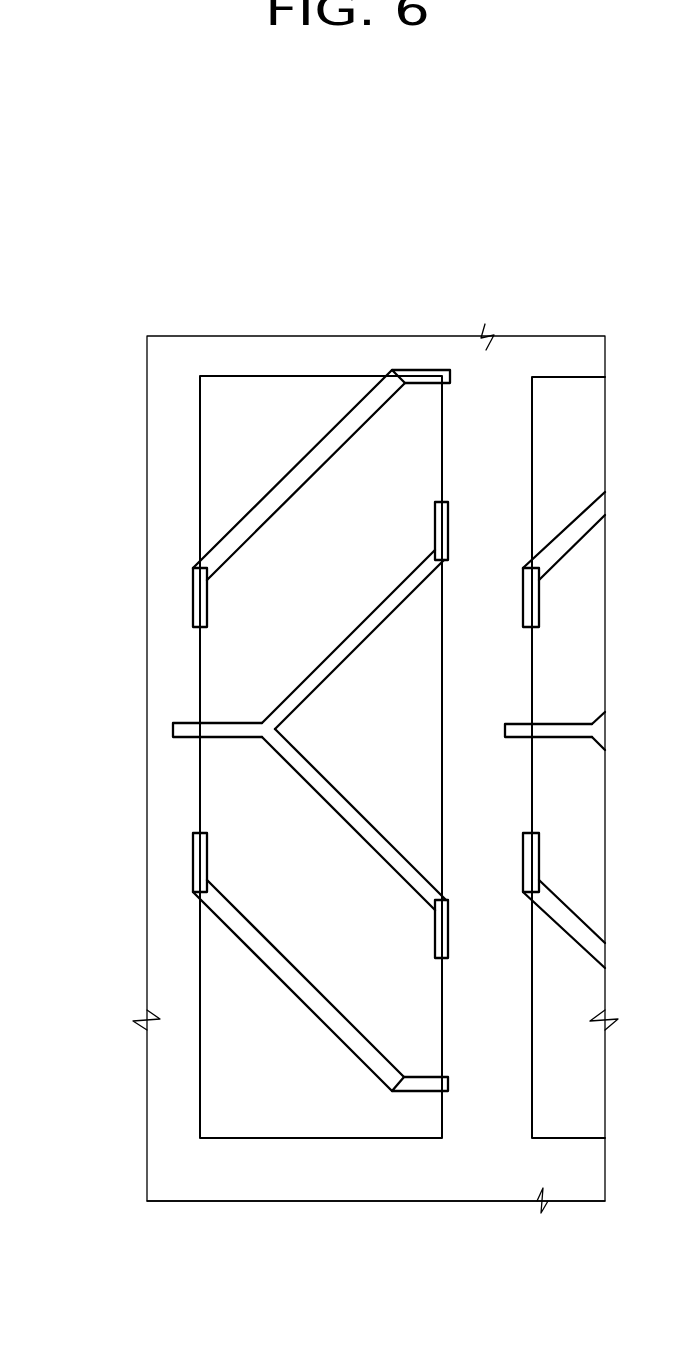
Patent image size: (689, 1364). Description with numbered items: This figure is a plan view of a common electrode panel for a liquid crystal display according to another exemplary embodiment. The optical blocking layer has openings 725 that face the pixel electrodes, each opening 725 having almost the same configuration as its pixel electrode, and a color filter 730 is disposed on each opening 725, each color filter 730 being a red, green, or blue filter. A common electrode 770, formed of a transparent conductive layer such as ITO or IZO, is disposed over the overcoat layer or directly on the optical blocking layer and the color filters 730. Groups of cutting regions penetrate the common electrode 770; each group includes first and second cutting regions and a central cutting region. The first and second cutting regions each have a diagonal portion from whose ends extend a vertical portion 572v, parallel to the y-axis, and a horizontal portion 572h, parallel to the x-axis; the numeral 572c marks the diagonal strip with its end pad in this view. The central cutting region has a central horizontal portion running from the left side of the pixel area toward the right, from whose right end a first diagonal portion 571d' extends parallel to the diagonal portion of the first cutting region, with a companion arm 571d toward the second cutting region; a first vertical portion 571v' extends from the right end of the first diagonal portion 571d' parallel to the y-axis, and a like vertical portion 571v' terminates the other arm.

The color filter 730 is at (238, 1177).
The opening 725 is at (320, 1138).
The common electrode 770 is at (390, 1201).
The connecting portion of second branch electrode 572c is at (405, 372).
The vertical portion 572v is at (195, 600).
The horizontal portion 572h is at (240, 733).
The first diagonal portion of first branch electrode 571d is at (433, 639).
The first diagonal portion 571d' is at (424, 819).
The first vertical portion 571v' is at (390, 730).